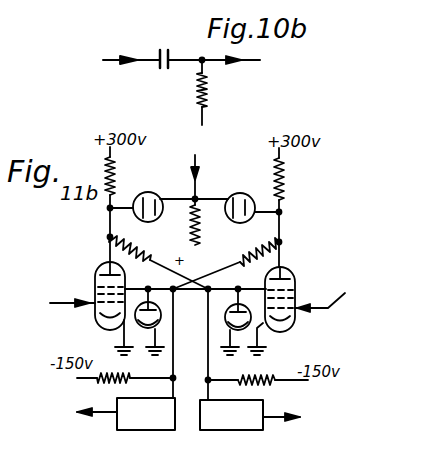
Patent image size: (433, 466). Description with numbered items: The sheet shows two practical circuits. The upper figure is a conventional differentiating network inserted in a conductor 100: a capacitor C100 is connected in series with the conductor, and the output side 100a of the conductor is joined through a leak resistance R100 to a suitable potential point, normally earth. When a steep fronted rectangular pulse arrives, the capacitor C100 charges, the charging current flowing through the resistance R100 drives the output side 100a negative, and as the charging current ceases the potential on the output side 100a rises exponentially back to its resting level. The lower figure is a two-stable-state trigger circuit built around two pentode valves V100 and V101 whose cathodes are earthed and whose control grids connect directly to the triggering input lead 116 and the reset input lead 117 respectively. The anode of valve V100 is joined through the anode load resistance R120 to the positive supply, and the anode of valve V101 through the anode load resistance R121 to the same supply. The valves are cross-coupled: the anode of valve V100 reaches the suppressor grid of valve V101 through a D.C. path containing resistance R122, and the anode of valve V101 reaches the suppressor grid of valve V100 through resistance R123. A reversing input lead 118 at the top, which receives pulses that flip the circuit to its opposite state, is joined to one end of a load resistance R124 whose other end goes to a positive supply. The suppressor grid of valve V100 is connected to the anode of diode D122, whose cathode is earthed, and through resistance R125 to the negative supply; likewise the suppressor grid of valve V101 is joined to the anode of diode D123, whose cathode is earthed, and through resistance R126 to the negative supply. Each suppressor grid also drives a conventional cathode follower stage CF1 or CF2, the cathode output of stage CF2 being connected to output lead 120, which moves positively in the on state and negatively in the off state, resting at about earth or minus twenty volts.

In FIG. 10B, the conductor 100 is at (110, 60).
In FIG. 10B, the output side of the conductor 100a is at (260, 60).
In FIG. 10B, the capacitor C100 is at (140, 49).
In FIG. 10B, the leak resistance R100 is at (224, 92).
In FIG. 11B, the reversing input lead 118 is at (212, 146).
In FIG. 11B, the anode load resistance R120 is at (118, 178).
In FIG. 11B, the anode load resistance R121 is at (288, 188).
In FIG. 11B, the resistance R122 is at (152, 253).
In FIG. 11B, the resistance R123 is at (250, 246).
In FIG. 11B, the load resistance R124 is at (190, 232).
In FIG. 11B, the pentode valve V100 is at (91, 276).
In FIG. 11B, the pentode valve V101 is at (299, 280).
In FIG. 11B, the triggering input lead 116 is at (54, 306).
In FIG. 11B, the reset input lead 117 is at (340, 298).
In FIG. 11B, the diode D122 is at (161, 313).
In FIG. 11B, the diode D123 is at (225, 320).
In FIG. 11B, the resistance R125 is at (119, 374).
In FIG. 11B, the resistance R126 is at (272, 376).
In FIG. 11B, the cathode follower stage CF1 is at (135, 430).
In FIG. 11B, the cathode follower stage CF2 is at (228, 430).
In FIG. 11B, the output lead 120 is at (267, 413).